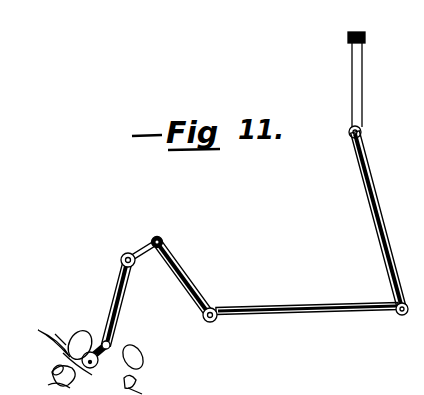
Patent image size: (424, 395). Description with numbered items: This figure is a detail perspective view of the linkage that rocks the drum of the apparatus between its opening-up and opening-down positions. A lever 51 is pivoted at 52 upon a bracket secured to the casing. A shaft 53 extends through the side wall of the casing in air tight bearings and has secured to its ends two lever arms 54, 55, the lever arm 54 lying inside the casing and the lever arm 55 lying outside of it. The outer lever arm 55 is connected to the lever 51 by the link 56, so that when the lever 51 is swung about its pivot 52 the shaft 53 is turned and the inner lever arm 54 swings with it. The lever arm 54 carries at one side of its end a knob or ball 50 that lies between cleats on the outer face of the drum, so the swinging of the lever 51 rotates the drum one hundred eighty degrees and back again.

The knob or ball 50 is at (118, 348).
The lever 51 is at (368, 184).
The pivot 52 is at (363, 129).
The shaft 53 is at (145, 250).
The lever arm 54 is at (188, 278).
The lever arm 55 is at (116, 291).
The link 56 is at (329, 312).